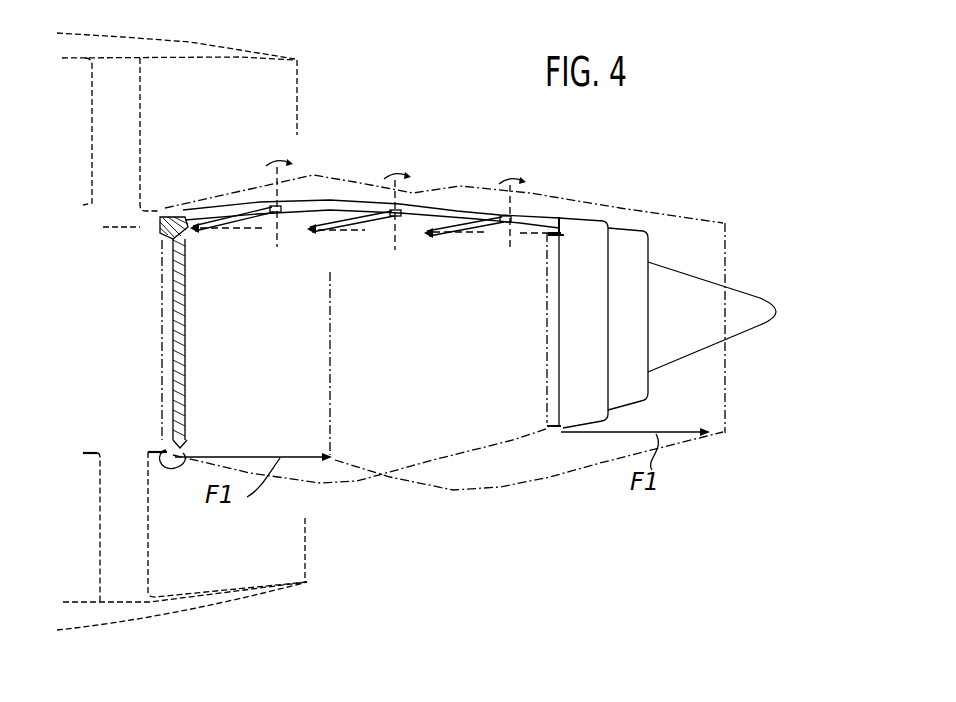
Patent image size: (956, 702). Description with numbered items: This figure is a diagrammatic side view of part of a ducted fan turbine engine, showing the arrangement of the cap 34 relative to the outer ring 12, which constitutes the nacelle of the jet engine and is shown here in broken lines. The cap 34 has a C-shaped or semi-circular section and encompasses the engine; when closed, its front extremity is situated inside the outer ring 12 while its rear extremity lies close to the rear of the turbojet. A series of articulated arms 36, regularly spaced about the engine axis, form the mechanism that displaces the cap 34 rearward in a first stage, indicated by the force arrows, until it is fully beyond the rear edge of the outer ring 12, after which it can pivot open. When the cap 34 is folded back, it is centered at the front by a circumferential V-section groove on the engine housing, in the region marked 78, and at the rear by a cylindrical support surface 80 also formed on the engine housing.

The outer ring 12 is at (191, 36).
The cap 34 is at (538, 214).
The articulated arm 36 is at (258, 206).
The inner lip 78 is at (173, 465).
The cylindrical support surface 80 is at (552, 430).